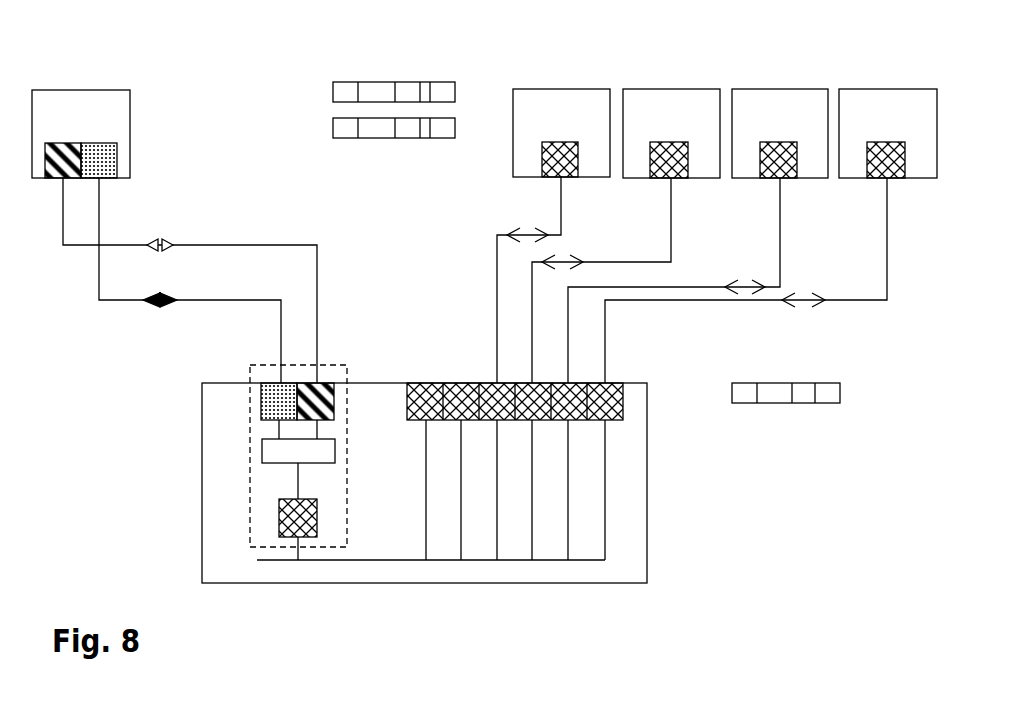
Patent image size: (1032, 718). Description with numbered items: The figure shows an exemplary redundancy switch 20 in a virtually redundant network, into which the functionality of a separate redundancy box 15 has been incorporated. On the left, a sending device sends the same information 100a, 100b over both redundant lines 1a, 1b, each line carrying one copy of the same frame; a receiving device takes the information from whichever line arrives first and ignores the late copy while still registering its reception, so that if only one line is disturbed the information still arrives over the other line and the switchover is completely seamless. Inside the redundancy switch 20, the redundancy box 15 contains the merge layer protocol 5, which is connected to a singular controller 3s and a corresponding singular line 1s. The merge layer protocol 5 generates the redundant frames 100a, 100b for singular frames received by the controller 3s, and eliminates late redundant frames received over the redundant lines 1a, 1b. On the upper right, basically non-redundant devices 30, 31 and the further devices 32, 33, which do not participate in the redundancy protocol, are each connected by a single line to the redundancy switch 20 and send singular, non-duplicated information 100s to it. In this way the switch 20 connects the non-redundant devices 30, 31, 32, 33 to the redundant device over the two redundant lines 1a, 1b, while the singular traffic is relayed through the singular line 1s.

The redundant line 1a is at (80, 250).
The redundant line 1b is at (93, 293).
The singular line 1s is at (410, 564).
The singular controller 3s is at (270, 516).
The merge layer protocol 5 is at (263, 463).
The redundancy box 15 is at (247, 430).
The redundancy switch 20 is at (660, 497).
The non-redundant device 30 is at (553, 236).
The non-redundant device 31 is at (626, 236).
The third sensor device 32 is at (698, 236).
The fourth sensor device 33 is at (771, 236).
The redundant frame 100a is at (163, 228).
The redundant frame 100b is at (190, 270).
The singular information 100s is at (697, 320).